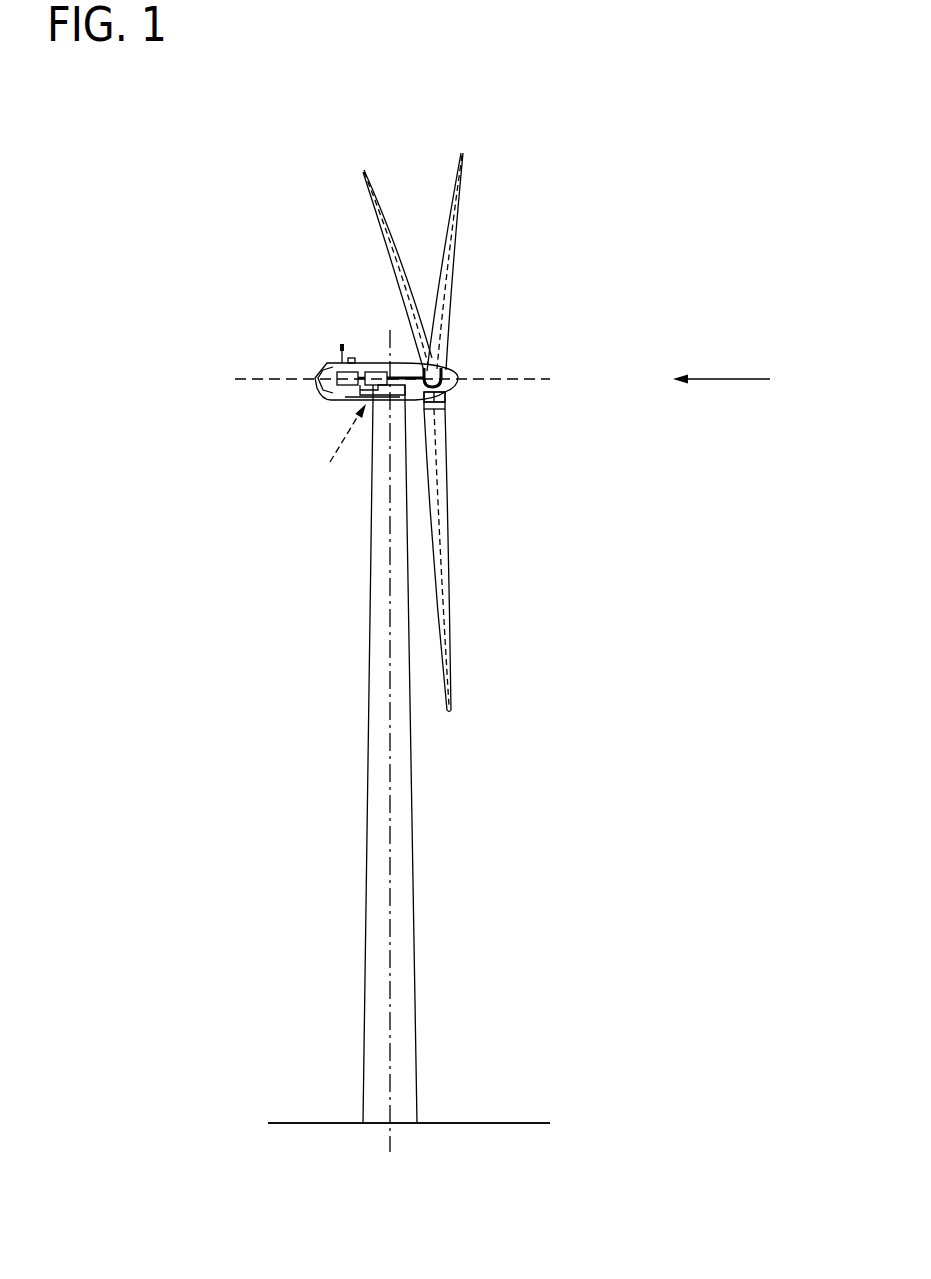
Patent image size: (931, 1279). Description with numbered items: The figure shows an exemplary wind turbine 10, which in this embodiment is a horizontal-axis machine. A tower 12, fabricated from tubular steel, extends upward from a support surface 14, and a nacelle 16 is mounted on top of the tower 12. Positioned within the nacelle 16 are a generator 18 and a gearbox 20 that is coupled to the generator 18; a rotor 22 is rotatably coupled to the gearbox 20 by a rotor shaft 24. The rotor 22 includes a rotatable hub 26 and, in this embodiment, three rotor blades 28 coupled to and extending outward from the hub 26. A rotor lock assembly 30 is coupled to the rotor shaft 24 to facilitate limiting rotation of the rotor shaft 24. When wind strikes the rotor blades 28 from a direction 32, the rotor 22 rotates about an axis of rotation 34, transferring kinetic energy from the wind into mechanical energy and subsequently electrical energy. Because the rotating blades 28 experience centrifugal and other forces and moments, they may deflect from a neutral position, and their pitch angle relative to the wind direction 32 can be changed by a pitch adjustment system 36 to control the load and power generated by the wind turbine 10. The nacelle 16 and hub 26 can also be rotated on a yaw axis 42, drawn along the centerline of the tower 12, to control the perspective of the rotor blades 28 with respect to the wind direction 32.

The wind turbine 10 is at (158, 172).
The tower 12 is at (367, 910).
The support surface 14 is at (323, 1123).
The nacelle 16 is at (348, 400).
The generator 18 is at (317, 366).
The gearbox 20 is at (376, 370).
The rotor 22 is at (472, 286).
The rotor shaft 24 is at (405, 365).
The rotatable hub 26 is at (445, 378).
The rotor blade 28 is at (384, 237).
The rotor lock assembly 30 is at (333, 445).
The direction 32 is at (742, 379).
The axis of rotation 34 is at (533, 381).
The pitch adjustment system 36 is at (447, 395).
The yaw axis 42 is at (390, 850).